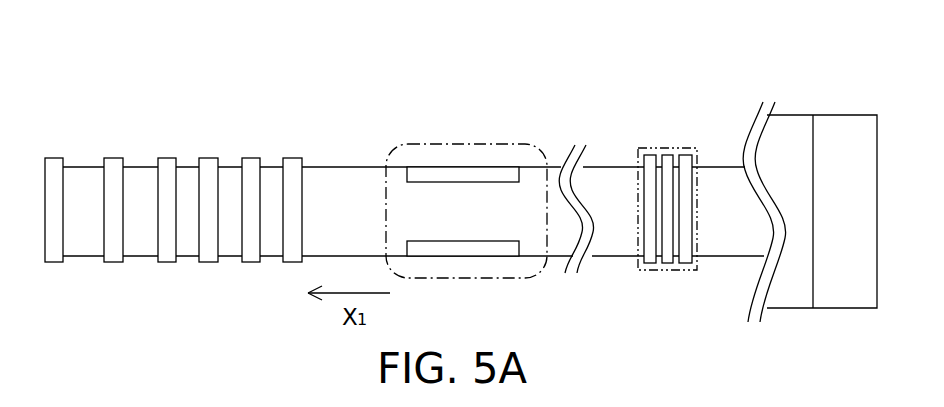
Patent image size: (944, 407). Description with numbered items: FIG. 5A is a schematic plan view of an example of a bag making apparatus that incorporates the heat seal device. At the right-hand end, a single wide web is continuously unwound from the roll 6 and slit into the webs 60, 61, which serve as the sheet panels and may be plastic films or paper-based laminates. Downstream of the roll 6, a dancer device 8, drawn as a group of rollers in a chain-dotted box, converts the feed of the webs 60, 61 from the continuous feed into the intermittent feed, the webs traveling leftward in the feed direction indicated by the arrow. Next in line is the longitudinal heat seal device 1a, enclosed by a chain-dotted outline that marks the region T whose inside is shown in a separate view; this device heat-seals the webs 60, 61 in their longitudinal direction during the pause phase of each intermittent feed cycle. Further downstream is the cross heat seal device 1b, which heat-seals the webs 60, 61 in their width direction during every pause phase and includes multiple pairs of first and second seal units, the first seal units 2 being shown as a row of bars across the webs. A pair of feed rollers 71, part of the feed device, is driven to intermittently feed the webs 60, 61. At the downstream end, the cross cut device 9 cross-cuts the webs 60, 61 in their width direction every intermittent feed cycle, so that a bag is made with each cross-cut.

The longitudinal heat seal device 1a is at (504, 129).
The cross heat seal device 1b is at (308, 152).
The first seal unit 2 is at (167, 168).
The region T is at (414, 144).
The roll 6 is at (843, 126).
The web 60 is at (722, 181).
The web 61 is at (723, 245).
The dancer device 8 is at (668, 147).
The cross cut device 9 is at (53, 165).
The feed roller 71 is at (113, 259).